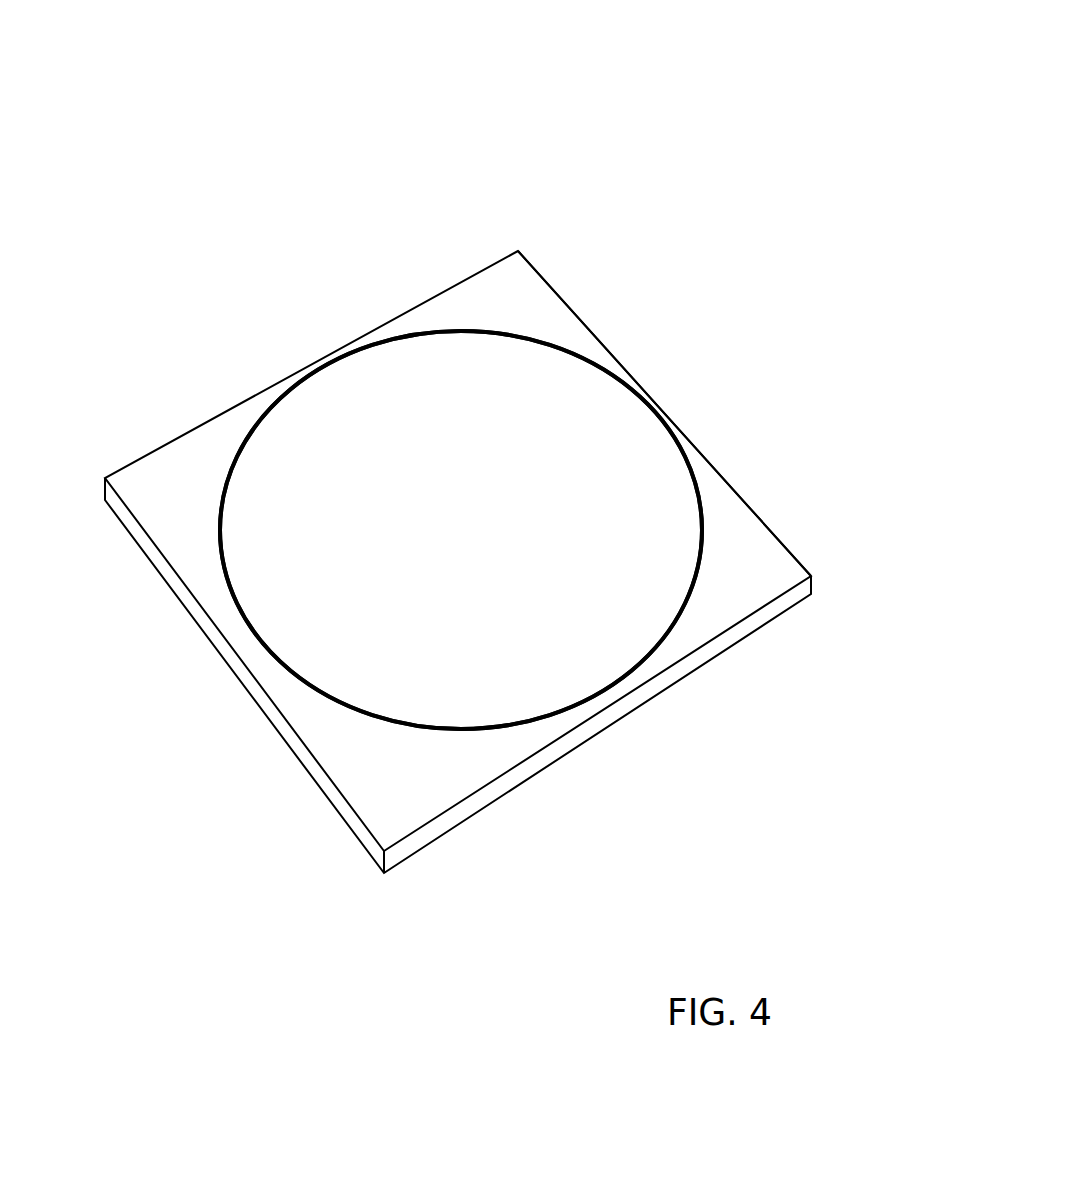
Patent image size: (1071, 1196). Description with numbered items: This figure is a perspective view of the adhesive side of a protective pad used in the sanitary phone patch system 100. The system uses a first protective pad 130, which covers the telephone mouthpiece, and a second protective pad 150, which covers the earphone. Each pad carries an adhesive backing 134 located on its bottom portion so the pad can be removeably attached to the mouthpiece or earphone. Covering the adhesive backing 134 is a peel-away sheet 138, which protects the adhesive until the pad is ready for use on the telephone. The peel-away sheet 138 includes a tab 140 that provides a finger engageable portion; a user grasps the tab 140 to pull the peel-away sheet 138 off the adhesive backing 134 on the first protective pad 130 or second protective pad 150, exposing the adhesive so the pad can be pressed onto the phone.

The sanitary phone patch system 100 is at (433, 447).
The first protective pad 130 is at (296, 425).
The adhesive backing 134 is at (162, 499).
The peel-away sheet 138 is at (468, 274).
The tab 140 is at (567, 305).
The second protective pad 150 is at (364, 378).